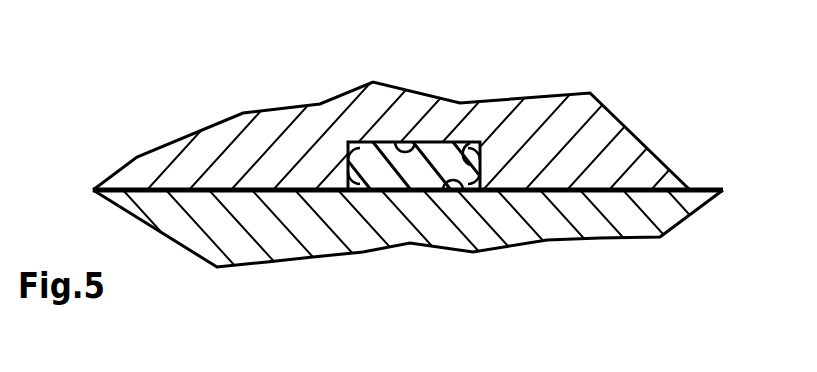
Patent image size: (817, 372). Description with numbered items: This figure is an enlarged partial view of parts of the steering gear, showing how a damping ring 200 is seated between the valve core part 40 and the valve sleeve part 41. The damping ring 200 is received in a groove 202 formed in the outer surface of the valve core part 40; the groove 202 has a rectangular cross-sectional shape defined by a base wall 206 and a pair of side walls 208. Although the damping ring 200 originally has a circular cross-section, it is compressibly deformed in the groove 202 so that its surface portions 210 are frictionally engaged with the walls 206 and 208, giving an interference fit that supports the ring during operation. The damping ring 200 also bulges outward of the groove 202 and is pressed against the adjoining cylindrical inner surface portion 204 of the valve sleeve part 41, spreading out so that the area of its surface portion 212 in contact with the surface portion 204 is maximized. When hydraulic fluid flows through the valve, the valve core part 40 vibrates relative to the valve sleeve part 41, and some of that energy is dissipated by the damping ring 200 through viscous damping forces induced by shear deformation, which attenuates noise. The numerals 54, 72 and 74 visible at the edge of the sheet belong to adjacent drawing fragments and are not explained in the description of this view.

The valve core part 40 is at (238, 108).
The valve sleeve part 41 is at (714, 180).
The element of adjacent figure 54 is at (117, 0).
The element of adjacent figure 72 is at (25, 22).
The element of adjacent figure 74 is at (82, 0).
The damping ring 200 is at (442, 120).
The groove 202 is at (377, 203).
The cylindrical inner surface portion 204 is at (458, 193).
The base wall 206 is at (360, 145).
The side walls 208 is at (392, 147).
The surface portions of the damping ring 210 is at (348, 166).
The surface portion of the damping ring 212 is at (405, 193).